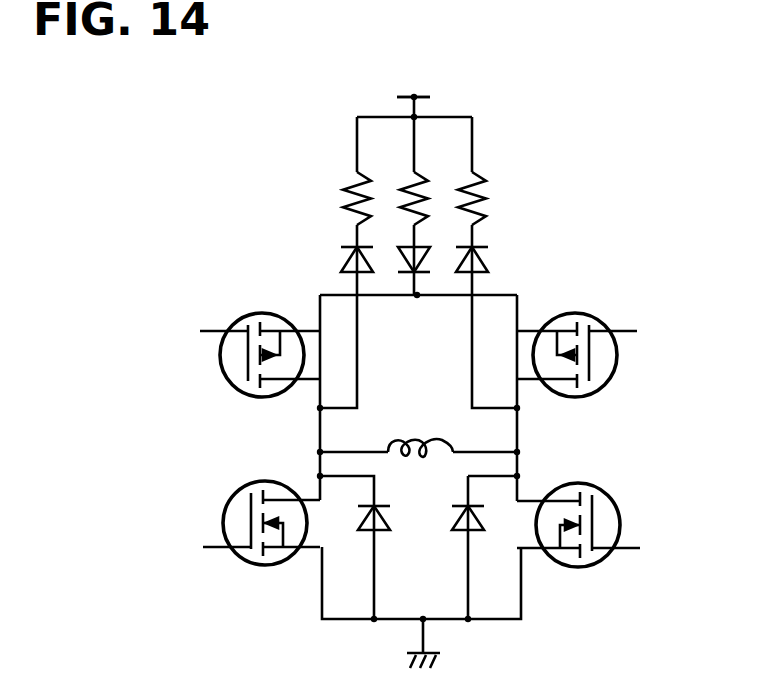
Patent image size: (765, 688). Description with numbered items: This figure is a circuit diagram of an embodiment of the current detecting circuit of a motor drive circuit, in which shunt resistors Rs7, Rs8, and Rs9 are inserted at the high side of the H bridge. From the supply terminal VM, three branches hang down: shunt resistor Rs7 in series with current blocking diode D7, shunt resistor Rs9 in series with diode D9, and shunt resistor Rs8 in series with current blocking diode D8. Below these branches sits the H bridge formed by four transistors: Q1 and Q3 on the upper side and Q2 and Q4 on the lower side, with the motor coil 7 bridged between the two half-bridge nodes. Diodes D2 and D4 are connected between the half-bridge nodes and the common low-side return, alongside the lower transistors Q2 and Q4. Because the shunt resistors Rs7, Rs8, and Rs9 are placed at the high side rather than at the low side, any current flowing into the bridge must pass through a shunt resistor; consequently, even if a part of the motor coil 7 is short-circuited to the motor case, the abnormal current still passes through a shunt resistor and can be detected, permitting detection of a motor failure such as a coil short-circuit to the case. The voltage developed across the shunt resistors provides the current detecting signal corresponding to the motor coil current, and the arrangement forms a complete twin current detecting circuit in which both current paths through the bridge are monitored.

The motor power supply voltage VM is at (414, 77).
The shunt resistor Rs7 is at (341, 200).
The shunt resistor Rs8 is at (486, 207).
The shunt resistor Rs9 is at (425, 196).
The current blocking diode D7 is at (340, 266).
The current blocking diode D8 is at (486, 257).
The diode D9 is at (408, 274).
The diode D2 is at (385, 518).
The diode D4 is at (462, 532).
The MOS transistor Q1 is at (246, 357).
The MOS transistor Q2 is at (247, 526).
The MOS transistor Q3 is at (594, 358).
The MOS transistor Q4 is at (595, 526).
The motor coil 7 is at (424, 437).